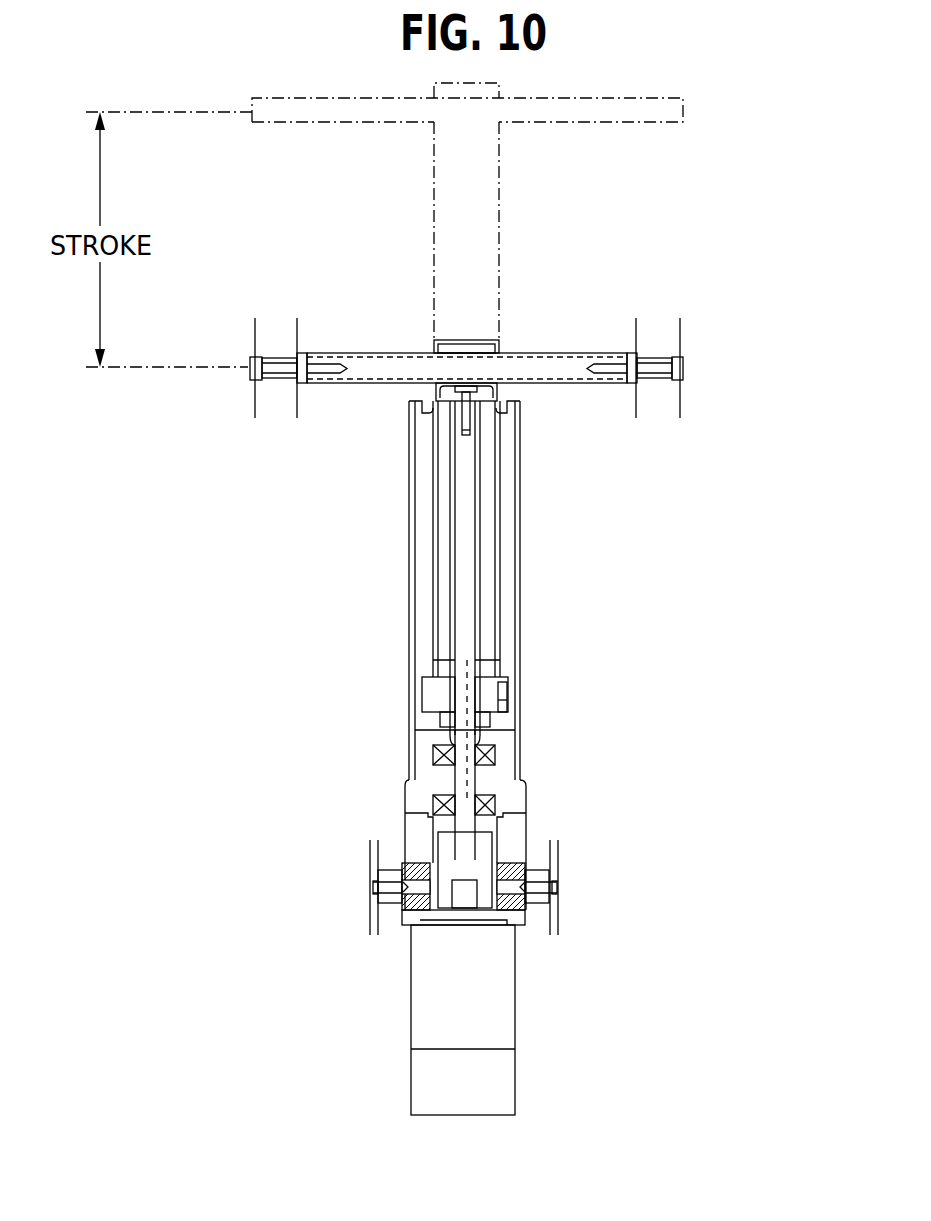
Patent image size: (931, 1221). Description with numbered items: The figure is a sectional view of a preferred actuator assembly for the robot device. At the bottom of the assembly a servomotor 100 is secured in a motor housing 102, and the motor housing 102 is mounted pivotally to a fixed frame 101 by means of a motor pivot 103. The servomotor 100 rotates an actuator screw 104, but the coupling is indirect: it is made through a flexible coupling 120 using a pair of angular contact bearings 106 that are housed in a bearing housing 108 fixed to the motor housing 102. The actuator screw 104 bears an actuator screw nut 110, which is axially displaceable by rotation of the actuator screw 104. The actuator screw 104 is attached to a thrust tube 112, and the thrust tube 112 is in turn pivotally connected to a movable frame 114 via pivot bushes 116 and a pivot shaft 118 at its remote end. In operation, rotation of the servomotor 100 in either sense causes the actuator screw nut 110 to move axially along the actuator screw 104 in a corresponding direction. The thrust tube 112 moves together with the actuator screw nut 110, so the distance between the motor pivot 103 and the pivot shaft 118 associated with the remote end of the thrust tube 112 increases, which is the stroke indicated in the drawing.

The servomotor 100 is at (516, 1040).
The fixed frame 101 is at (558, 915).
The motor housing 102 is at (405, 830).
The motor pivot 103 is at (537, 862).
The actuator screw 104 is at (480, 605).
The angular contact bearings 106 is at (495, 760).
The bearing housing 108 is at (405, 785).
The actuator screw nut 110 is at (508, 680).
The thrust tube 112 is at (435, 498).
The movable frame 114 is at (683, 335).
The pivot bushes 116 is at (626, 385).
The pivot shaft 118 is at (551, 353).
The flexible coupling 120 is at (556, 885).